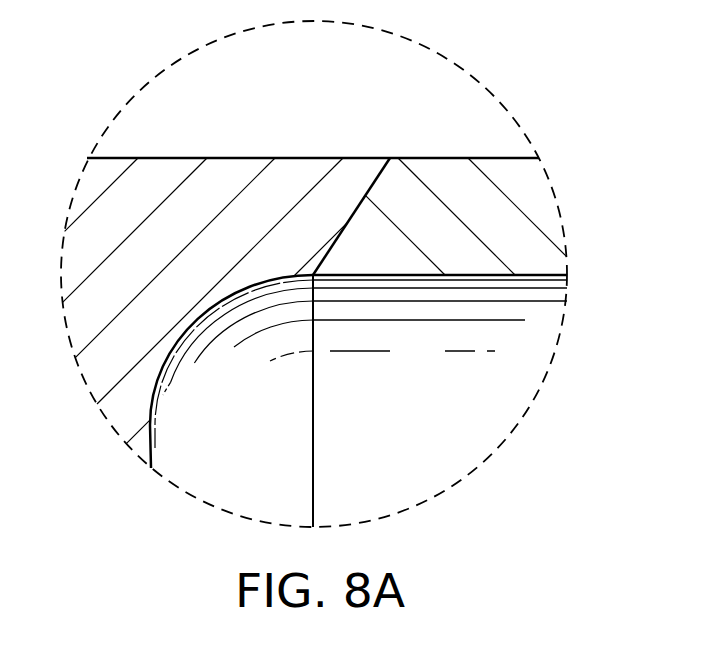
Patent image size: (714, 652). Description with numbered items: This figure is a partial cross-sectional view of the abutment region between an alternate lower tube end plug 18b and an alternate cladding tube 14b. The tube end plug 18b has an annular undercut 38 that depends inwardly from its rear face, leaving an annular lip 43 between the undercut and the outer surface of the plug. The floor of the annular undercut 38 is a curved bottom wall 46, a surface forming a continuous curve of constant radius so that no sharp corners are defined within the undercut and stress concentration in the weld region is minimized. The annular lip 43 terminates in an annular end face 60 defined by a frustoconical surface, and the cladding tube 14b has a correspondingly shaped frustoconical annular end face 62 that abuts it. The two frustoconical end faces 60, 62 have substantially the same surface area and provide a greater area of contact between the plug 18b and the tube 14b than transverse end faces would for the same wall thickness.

The lower tube end plug 18b is at (170, 158).
The cladding tube 14b is at (500, 158).
The annular lip 43 is at (222, 140).
The annular end face 60 is at (352, 213).
The annular end face 62 is at (330, 250).
The bottom wall 46 is at (152, 452).
The annular undercut 38 is at (255, 436).